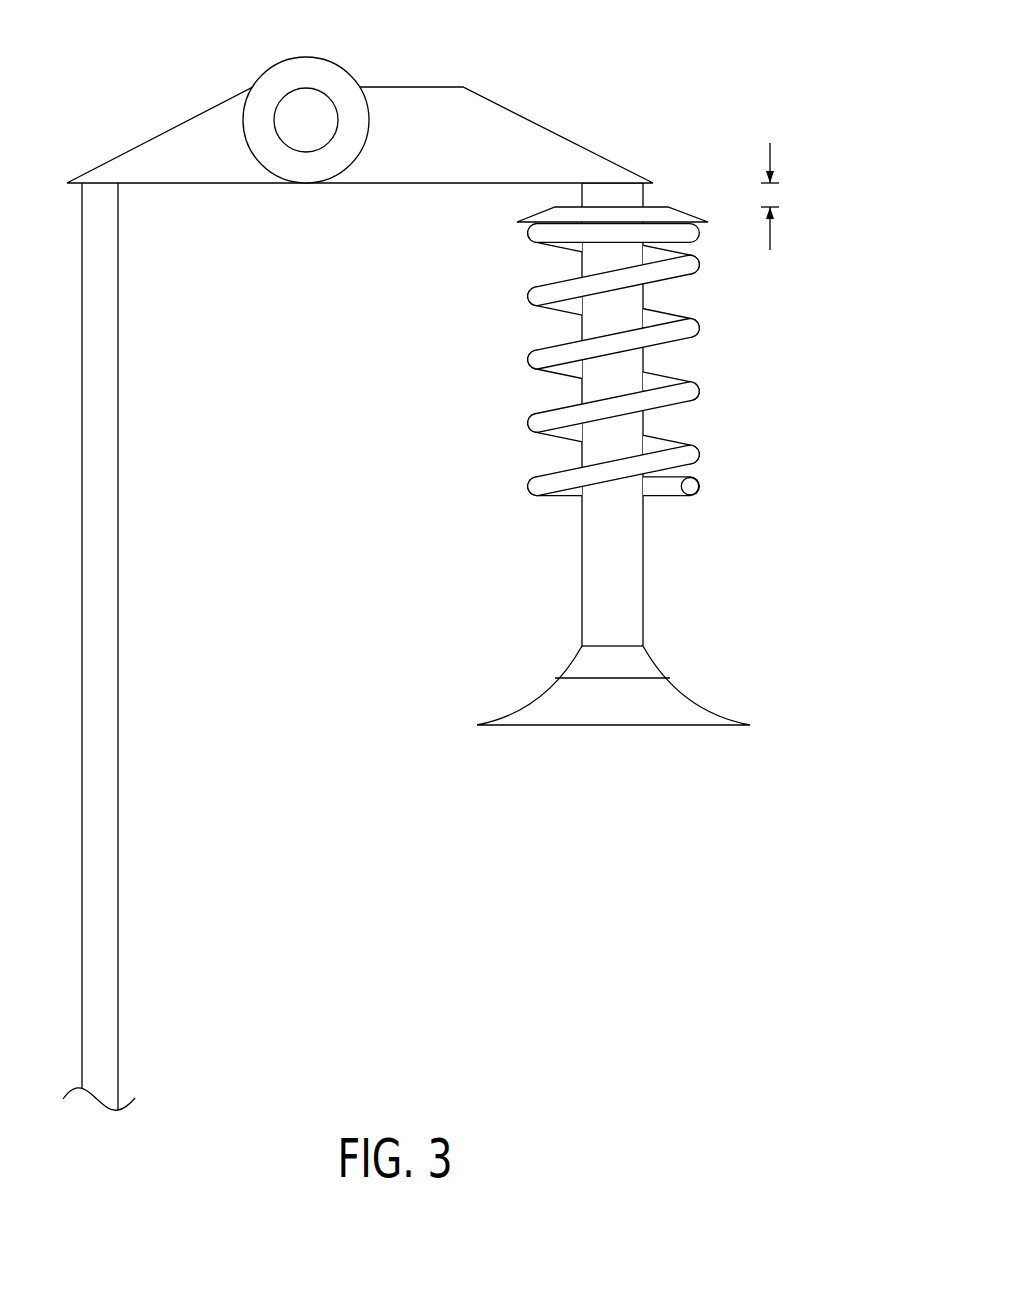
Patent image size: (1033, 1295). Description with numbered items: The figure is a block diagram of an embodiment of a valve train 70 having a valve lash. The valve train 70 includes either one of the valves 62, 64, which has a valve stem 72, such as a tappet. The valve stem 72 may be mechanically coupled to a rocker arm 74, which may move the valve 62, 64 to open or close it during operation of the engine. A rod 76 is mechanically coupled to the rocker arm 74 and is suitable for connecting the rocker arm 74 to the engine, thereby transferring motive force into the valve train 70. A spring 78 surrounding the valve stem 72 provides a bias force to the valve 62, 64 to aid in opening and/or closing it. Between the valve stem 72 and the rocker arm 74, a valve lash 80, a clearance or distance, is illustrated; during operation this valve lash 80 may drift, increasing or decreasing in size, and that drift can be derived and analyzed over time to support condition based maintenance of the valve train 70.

The valve train 70 is at (646, 41).
The valve stem 72 is at (582, 572).
The rocker arm 74 is at (410, 87).
The rod 76 is at (118, 883).
The spring 78 is at (694, 336).
The valve lash 80 is at (773, 153).
The valve 62 is at (628, 720).
The valve 64 is at (727, 727).